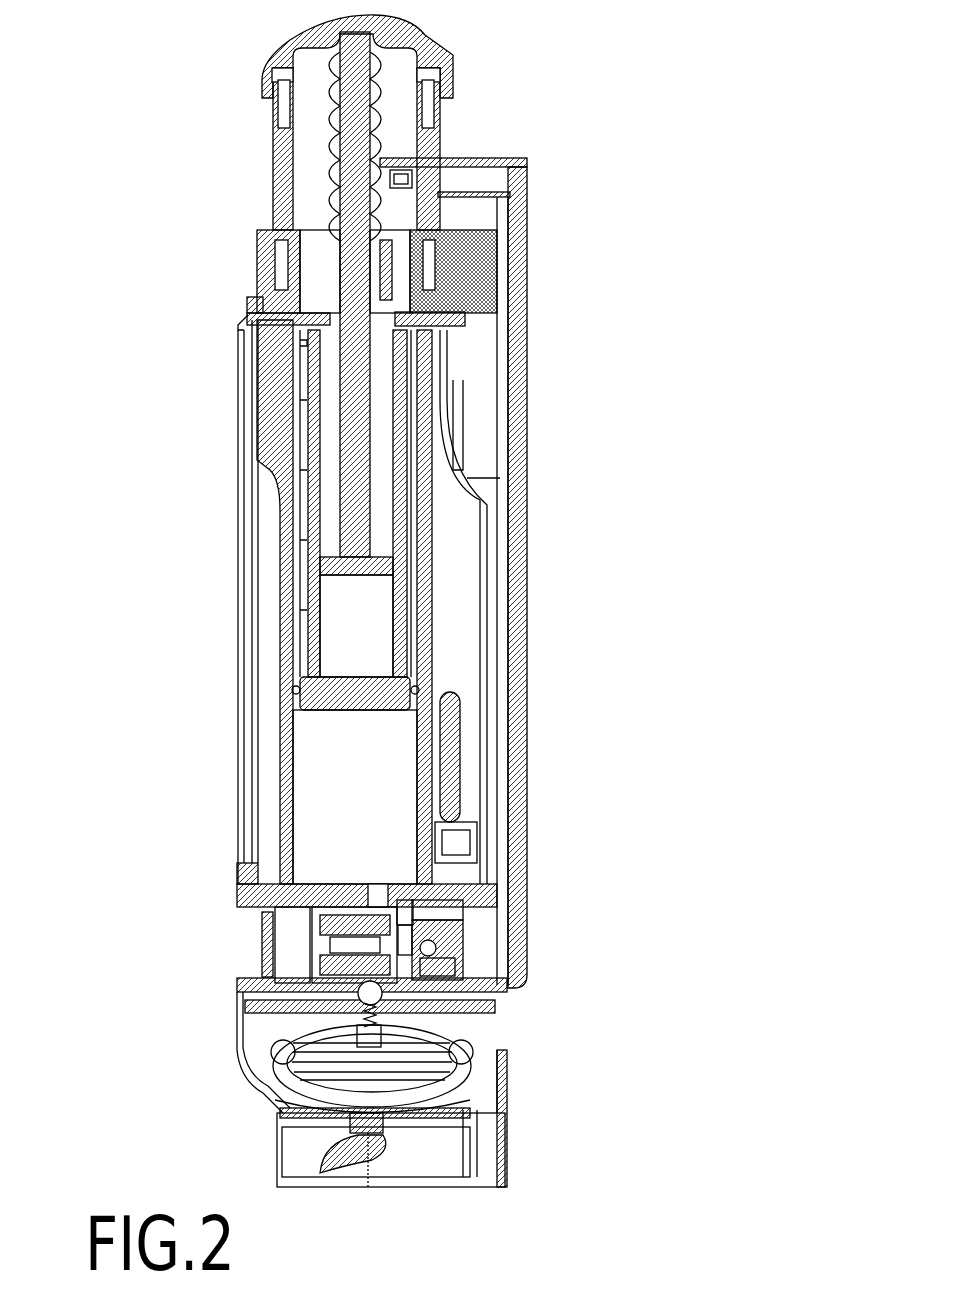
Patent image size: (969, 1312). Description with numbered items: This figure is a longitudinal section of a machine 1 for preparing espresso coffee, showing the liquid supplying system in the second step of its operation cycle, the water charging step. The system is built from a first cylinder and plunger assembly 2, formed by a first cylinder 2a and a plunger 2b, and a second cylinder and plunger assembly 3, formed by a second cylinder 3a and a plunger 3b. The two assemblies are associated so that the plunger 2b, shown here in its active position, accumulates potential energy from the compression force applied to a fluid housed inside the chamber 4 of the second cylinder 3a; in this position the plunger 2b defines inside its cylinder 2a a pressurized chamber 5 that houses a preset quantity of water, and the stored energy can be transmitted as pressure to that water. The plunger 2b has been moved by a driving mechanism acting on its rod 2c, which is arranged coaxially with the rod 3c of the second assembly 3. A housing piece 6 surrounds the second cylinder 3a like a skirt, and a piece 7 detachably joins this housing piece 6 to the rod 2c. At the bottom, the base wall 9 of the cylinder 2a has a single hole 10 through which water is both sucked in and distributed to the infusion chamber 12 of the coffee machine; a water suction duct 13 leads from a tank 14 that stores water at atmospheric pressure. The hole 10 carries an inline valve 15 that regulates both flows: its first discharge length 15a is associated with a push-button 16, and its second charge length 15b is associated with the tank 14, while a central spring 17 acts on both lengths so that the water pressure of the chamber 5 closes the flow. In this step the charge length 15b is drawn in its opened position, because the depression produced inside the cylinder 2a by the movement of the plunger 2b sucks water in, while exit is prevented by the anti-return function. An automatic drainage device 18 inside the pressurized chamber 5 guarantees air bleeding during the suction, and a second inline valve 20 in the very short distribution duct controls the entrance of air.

The machine 1 is at (525, 108).
The first cylinder and plunger assembly 2 is at (430, 526).
The first cylinder 2a is at (280, 842).
The plunger 2b is at (290, 695).
The rod 2c is at (327, 163).
The second cylinder and plunger assembly 3 is at (325, 537).
The second cylinder 3a is at (317, 650).
The plunger 3b is at (357, 566).
The rod 3c is at (368, 408).
The chamber 4 is at (372, 628).
The pressurized chamber 5 is at (335, 790).
The housing piece 6 is at (297, 560).
The piece 7 is at (327, 322).
The base wall 9 is at (320, 890).
The hole 10 is at (405, 898).
The infusion chamber 12 is at (407, 1058).
The water suction duct 13 is at (460, 948).
The tank 14 is at (470, 758).
The inline valve 15 is at (434, 962).
The first discharge length 15a is at (323, 960).
The second charge length 15b is at (430, 943).
The push-button 16 is at (323, 942).
The central spring 17 is at (400, 935).
The automatic drainage device 18 is at (382, 882).
The second inline valve 20 is at (367, 1000).